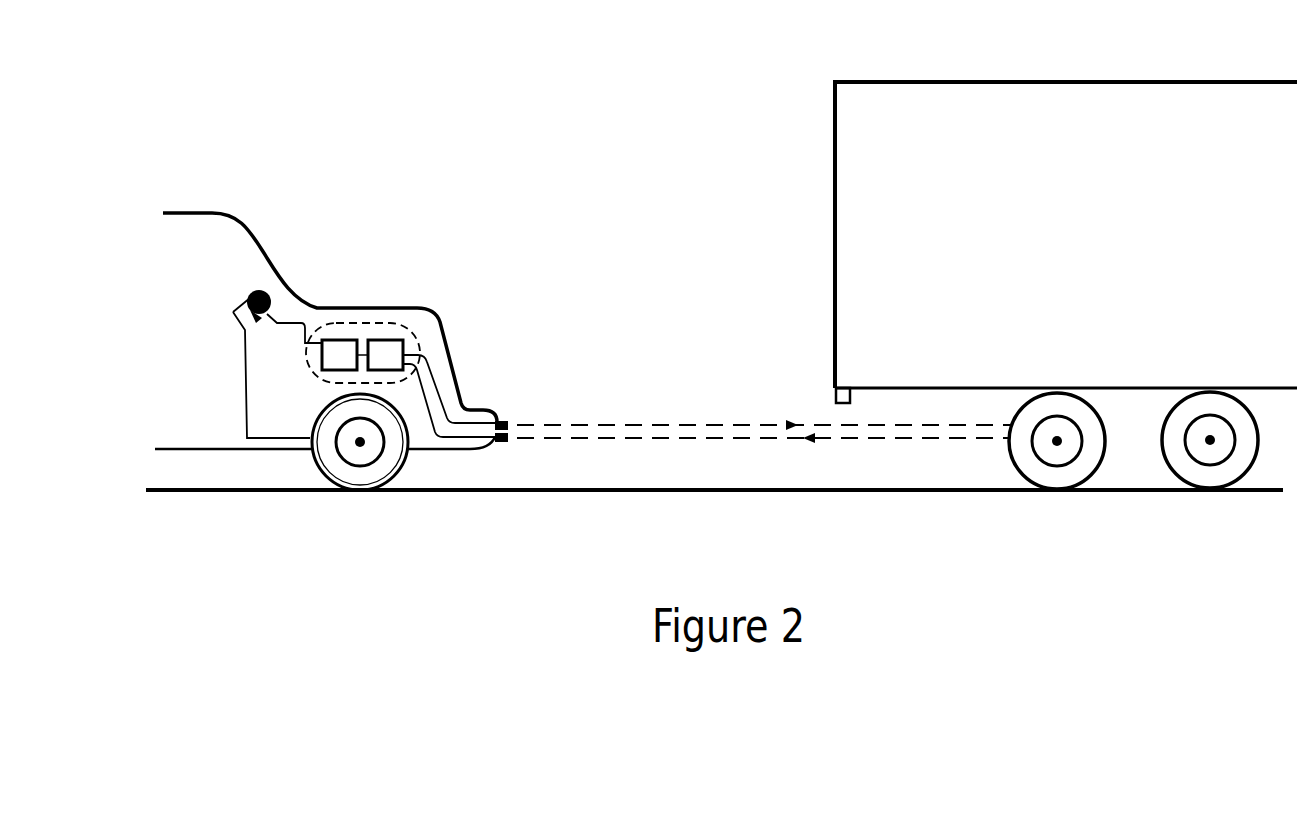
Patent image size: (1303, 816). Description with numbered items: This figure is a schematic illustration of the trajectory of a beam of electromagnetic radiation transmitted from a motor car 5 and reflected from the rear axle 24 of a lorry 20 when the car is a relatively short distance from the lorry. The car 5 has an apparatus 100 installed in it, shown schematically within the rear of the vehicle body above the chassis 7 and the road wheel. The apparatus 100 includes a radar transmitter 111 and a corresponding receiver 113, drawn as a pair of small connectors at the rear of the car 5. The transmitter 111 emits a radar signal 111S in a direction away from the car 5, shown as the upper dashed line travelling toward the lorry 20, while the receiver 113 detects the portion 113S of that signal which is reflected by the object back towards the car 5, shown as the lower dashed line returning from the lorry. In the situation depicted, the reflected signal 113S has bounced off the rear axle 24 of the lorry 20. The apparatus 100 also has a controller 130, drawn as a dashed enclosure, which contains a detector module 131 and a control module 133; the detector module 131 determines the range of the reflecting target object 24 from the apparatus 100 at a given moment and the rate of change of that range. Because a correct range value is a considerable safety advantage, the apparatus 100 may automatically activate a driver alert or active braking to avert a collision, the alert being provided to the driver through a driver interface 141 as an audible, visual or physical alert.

The motor car 5 is at (208, 213).
The vehicle chassis 7 is at (463, 450).
The lorry 20 is at (1066, 288).
The rear axle 24 is at (1058, 442).
The apparatus 100 is at (432, 303).
The radar transmitter 111 is at (507, 421).
The radar signal 111S is at (657, 423).
The receiver 113 is at (505, 443).
The reflected signal portion 113S is at (655, 438).
The controller 130 is at (420, 362).
The detector module 131 is at (384, 339).
The control module 133 is at (338, 339).
The driver interface 141 is at (266, 292).